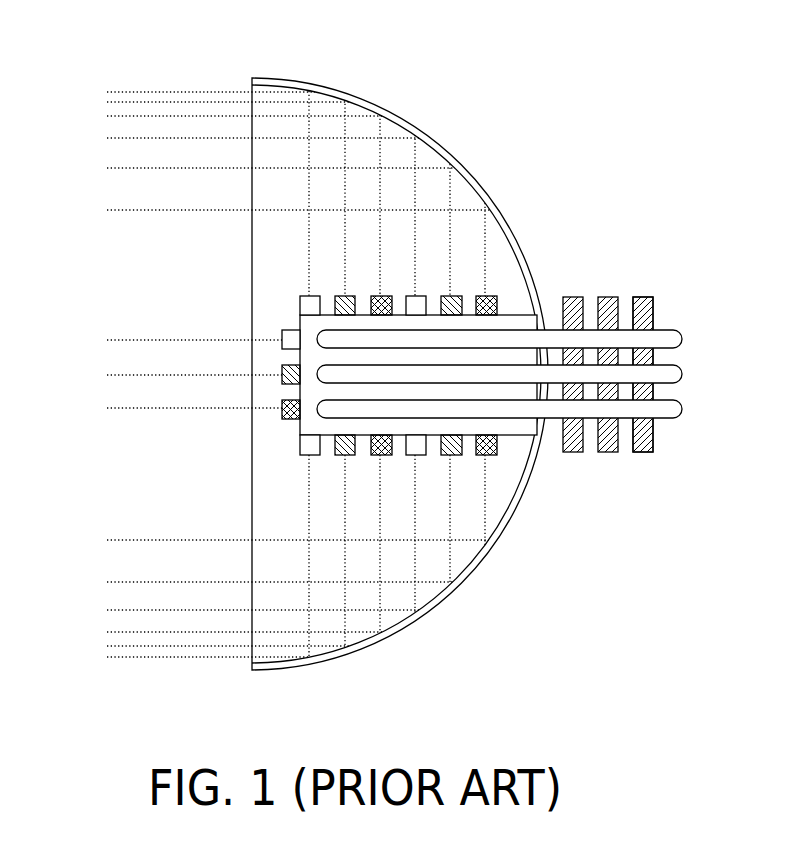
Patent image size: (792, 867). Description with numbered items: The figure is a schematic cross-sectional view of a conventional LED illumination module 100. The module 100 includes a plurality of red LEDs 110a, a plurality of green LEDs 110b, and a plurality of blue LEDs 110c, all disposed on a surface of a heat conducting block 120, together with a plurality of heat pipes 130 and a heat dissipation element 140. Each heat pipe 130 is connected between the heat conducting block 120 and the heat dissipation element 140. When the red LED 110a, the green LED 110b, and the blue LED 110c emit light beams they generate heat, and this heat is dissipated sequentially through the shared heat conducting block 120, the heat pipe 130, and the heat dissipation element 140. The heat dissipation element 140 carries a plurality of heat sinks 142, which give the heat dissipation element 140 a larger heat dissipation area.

The LED illumination module 100 is at (432, 388).
The red LED 110a is at (282, 412).
The green LED 110b is at (282, 377).
The blue LED 110c is at (282, 337).
The heat conducting block 120 is at (508, 425).
The heat pipe 130 is at (660, 375).
The heat dissipation element 140 is at (660, 387).
The heat sink 142 is at (645, 297).